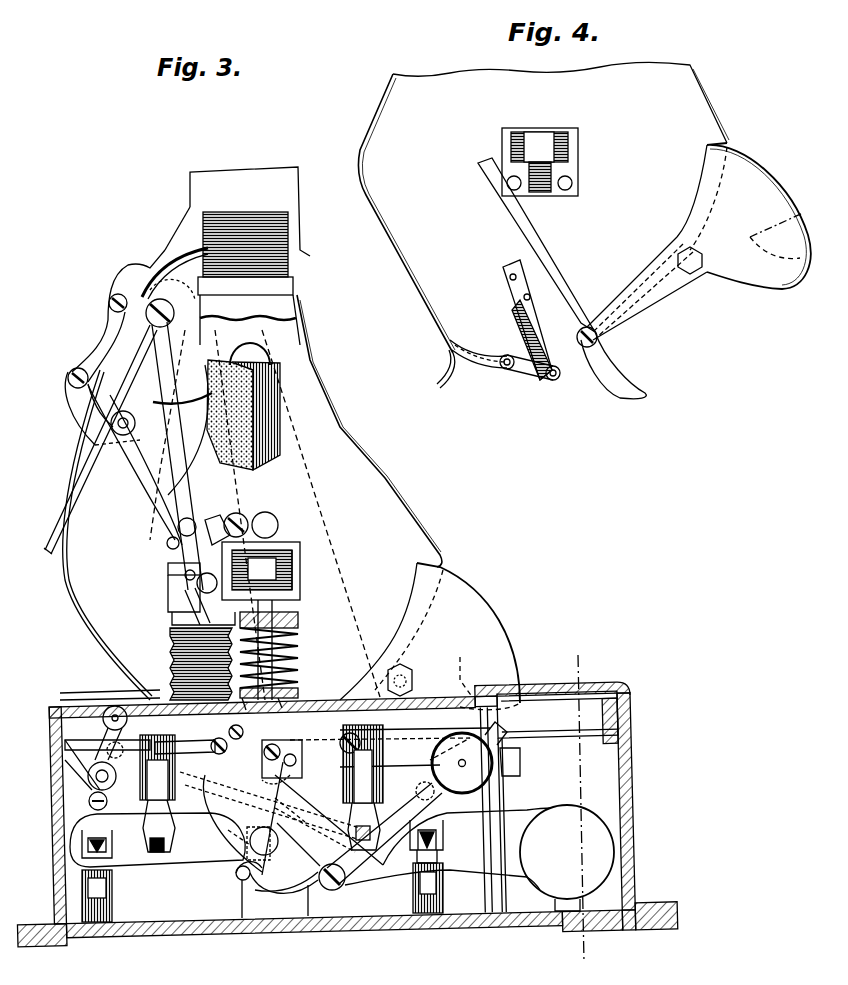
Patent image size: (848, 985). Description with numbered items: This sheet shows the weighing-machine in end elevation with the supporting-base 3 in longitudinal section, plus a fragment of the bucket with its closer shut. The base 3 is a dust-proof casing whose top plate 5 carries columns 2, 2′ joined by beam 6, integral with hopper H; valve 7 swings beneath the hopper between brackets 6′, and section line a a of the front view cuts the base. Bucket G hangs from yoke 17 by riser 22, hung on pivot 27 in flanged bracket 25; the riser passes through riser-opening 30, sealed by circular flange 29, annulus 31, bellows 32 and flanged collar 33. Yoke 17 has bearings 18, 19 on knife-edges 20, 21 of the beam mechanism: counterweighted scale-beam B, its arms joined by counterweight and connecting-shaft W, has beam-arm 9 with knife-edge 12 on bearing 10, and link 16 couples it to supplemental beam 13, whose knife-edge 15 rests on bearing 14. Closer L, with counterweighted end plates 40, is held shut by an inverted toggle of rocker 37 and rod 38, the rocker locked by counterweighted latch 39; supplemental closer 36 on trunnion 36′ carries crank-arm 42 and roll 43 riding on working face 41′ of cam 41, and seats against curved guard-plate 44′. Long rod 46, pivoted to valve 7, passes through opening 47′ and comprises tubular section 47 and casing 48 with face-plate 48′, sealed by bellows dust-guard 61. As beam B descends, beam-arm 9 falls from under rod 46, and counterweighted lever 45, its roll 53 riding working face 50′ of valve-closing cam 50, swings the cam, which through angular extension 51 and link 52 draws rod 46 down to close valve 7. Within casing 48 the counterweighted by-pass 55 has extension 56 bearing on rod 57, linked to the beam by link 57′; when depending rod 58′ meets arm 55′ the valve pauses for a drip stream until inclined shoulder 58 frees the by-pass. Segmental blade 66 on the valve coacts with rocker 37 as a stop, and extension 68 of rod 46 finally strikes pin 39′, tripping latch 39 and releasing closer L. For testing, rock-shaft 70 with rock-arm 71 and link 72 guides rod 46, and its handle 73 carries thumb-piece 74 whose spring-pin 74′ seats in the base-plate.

In FIG. 3, the chute or hopper H is at (237, 211).
In FIG. 3, the bucket G is at (386, 478).
In FIG. 4, the bucket G is at (543, 207).
In FIG. 3, the closer L is at (411, 680).
In FIG. 4, the closer L is at (647, 288).
In FIG. 3, the combined counterweight and connecting-shaft W is at (582, 832).
In FIG. 3, the counterweighted scale-beam B is at (448, 849).
In FIG. 3, the section line a is at (578, 809).
In FIG. 3, the side frame or column 2 is at (286, 310).
In FIG. 3, the side frame or column 2′ is at (293, 344).
In FIG. 3, the chambered supporting-base 3 is at (628, 875).
In FIG. 3, the top plate 5 is at (596, 686).
In FIG. 3, the plate or beam 6 is at (290, 283).
In FIG. 3, the brackets or arms 6′ is at (175, 270).
In FIG. 3, the valve 7 is at (124, 282).
In FIG. 3, the beam-arm 9 is at (310, 830).
In FIG. 3, the bearing 10 is at (440, 840).
In FIG. 3, the knife-edge 12 is at (476, 757).
In FIG. 3, the supplemental beam 13 is at (180, 860).
In FIG. 3, the bearing 14 is at (88, 862).
In FIG. 3, the knife-edge 15 is at (84, 842).
In FIG. 3, the link 16 is at (240, 875).
In FIG. 3, the bucket-supporting frame or yoke 17 is at (412, 748).
In FIG. 3, the V-shaped bearing 18 is at (152, 830).
In FIG. 3, the bearing 19 is at (374, 808).
In FIG. 3, the pivot or knife-edge 20 is at (156, 855).
In FIG. 3, the pivot or knife-edge 21 is at (374, 838).
In FIG. 3, the riser or hanger 22 is at (275, 598).
In FIG. 3, the flanged bracket 25 is at (288, 545).
In FIG. 4, the flanged bracket 25 is at (567, 130).
In FIG. 3, the pivot 27 is at (293, 560).
In FIG. 3, the circular flange 29 is at (270, 696).
In FIG. 3, the riser-opening 30 is at (290, 694).
In FIG. 3, the annulus 31 is at (282, 686).
In FIG. 3, the bellows 32 is at (298, 640).
In FIG. 3, the flanged collar 33 is at (298, 622).
In FIG. 3, the supplemental closer or flap 36 is at (160, 872).
In FIG. 4, the supplemental closer or flap 36 is at (478, 366).
In FIG. 4, the pivot or trunnion 36′ is at (507, 372).
In FIG. 3, the rocker 37 is at (140, 464).
In FIG. 3, the rod 38 is at (112, 452).
In FIG. 4, the rod 38 is at (540, 246).
In FIG. 3, the latch 39 is at (258, 513).
In FIG. 3, the pin 39′ is at (170, 540).
In FIG. 3, the counterweighted end plates 40 is at (484, 604).
In FIG. 4, the counterweighted end plates 40 is at (740, 267).
In FIG. 4, the cam 41 is at (610, 382).
In FIG. 4, the working face 41′ is at (620, 402).
In FIG. 4, the crank-arm 42 is at (532, 372).
In FIG. 4, the antifriction-roll 43 is at (558, 378).
In FIG. 4, the hook 44′ is at (440, 360).
In FIG. 3, the counterweighted lever 45 is at (304, 918).
In FIG. 3, the rod 46 is at (156, 446).
In FIG. 3, the tubular section 47 is at (170, 664).
In FIG. 3, the opening 47′ is at (130, 692).
In FIG. 3, the casing 48 is at (168, 600).
In FIG. 3, the removable face-plate 48′ is at (172, 615).
In FIG. 3, the valve-closing cam 50 is at (232, 822).
In FIG. 3, the working face 50′ is at (250, 842).
In FIG. 3, the angular extension 51 is at (285, 742).
In FIG. 3, the link 52 is at (300, 770).
In FIG. 3, the antifriction-roll 53 is at (242, 920).
In FIG. 3, the by-pass device 55 is at (262, 570).
In FIG. 3, the arm 55′ is at (222, 530).
In FIG. 3, the downward extension 56 is at (176, 590).
In FIG. 3, the arresting device or by-pass controller 57 is at (176, 626).
In FIG. 3, the link 57′ is at (216, 758).
In FIG. 3, the inclined shoulder 58 is at (168, 576).
In FIG. 3, the depending rod 58′ is at (72, 487).
In FIG. 3, the dust-guard 61 is at (170, 650).
In FIG. 3, the segmental blade 66 is at (190, 347).
In FIG. 3, the extension 68 is at (187, 518).
In FIG. 3, the rock-shaft 70 is at (88, 778).
In FIG. 3, the rock-arm 71 is at (100, 758).
In FIG. 3, the link 72 is at (136, 770).
In FIG. 3, the crank or handle 73 is at (66, 742).
In FIG. 3, the thumb-piece 74 is at (114, 722).
In FIG. 3, the spring-pin 74′ is at (112, 712).